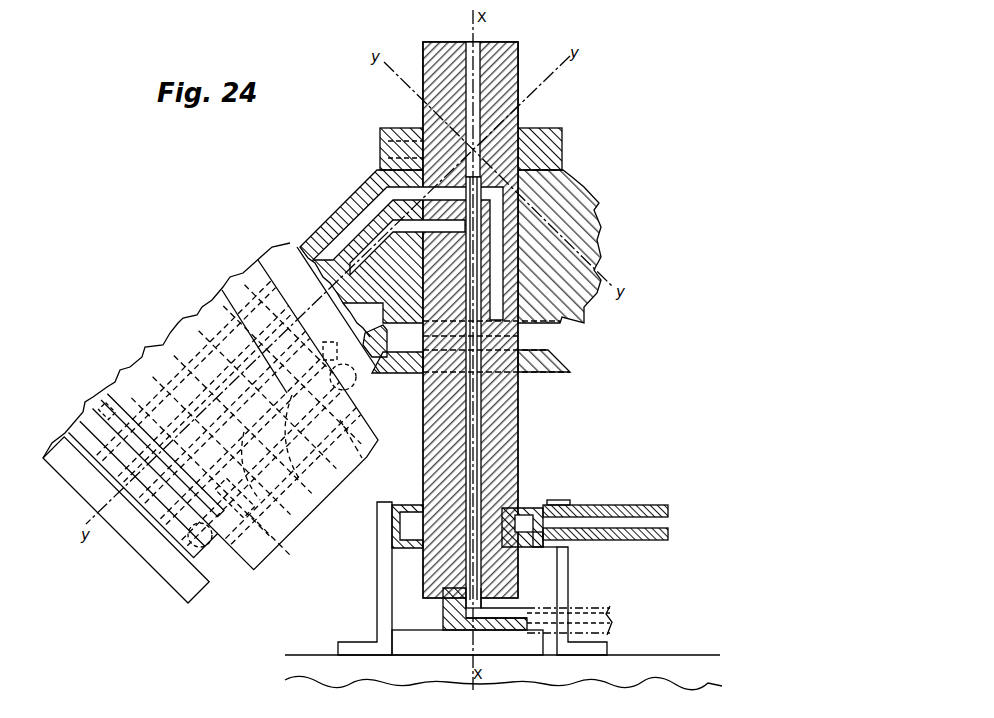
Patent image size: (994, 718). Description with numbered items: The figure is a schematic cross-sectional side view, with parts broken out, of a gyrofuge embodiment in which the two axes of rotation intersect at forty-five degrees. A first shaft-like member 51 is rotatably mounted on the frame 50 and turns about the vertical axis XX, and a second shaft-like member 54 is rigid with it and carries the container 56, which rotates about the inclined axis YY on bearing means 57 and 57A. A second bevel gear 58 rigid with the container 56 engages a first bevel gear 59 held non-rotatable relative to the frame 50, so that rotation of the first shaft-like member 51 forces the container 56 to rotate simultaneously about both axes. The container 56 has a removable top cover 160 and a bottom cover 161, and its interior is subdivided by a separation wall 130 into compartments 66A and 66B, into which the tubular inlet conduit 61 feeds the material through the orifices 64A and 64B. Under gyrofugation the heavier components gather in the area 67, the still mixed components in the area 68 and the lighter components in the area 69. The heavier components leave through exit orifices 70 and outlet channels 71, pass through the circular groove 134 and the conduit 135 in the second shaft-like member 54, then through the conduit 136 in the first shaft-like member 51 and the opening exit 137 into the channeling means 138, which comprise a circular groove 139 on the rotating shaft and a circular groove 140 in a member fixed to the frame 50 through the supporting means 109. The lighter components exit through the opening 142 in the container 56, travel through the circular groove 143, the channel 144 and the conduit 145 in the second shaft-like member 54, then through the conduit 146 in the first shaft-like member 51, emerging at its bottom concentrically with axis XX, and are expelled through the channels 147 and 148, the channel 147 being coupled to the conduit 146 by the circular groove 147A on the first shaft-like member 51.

The frame 50 is at (672, 657).
The first shaft-like member 51 is at (502, 113).
The second shaft-like member 54 is at (342, 214).
The container 56 is at (313, 503).
The bearing means 57 is at (377, 377).
The bearing means 57A is at (215, 538).
The second bevel gear 58 is at (388, 343).
The first bevel gear 59 is at (565, 366).
The inlet conduit 61 is at (479, 49).
The orifice 64A is at (244, 432).
The orifice 64B is at (145, 346).
The compartment 66A is at (362, 458).
The compartment 66B is at (140, 372).
The area of heavier components 67 is at (217, 490).
The area of mixed components 68 is at (268, 415).
The area of lighter components 69 is at (342, 453).
The exit orifice 70 is at (246, 513).
The outlet channel 71 is at (133, 527).
The supporting means 109 is at (377, 587).
The separation wall 130 is at (187, 437).
The circular groove 134 is at (152, 554).
The conduit 135 is at (180, 398).
The conduit 136 is at (497, 255).
The opening exit 137 is at (525, 507).
The channeling means 138 is at (548, 505).
The circular groove 139 is at (512, 524).
The circular groove 140 is at (543, 541).
The opening 142 is at (298, 407).
The circular groove 143 is at (292, 395).
The channel 144 is at (262, 341).
The conduit 145 is at (311, 246).
The conduit 146 is at (479, 445).
The channel 147 is at (443, 614).
The circular groove 147A is at (490, 594).
The channel 148 is at (487, 337).
The top cover 160 is at (379, 441).
The bottom cover 161 is at (100, 412).